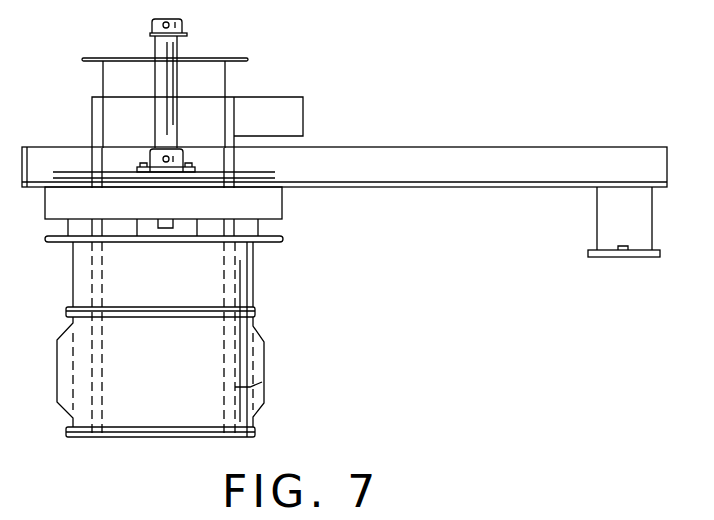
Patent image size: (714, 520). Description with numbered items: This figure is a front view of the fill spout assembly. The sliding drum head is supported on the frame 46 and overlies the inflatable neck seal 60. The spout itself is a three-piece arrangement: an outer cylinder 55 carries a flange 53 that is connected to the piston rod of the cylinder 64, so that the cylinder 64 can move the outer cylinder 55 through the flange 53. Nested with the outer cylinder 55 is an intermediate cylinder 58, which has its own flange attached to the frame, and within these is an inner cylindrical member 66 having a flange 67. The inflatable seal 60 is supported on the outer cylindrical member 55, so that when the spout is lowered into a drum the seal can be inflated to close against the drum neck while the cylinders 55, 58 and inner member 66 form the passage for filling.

The frame 46 is at (393, 157).
The flange 53 is at (284, 240).
The outer cylinder 55 is at (255, 283).
The intermediate cylinder 58 is at (268, 378).
The inflatable neck seal 60 is at (263, 353).
The cylinder 64 is at (177, 46).
The inner cylindrical member 66 is at (227, 83).
The flange 67 is at (248, 60).